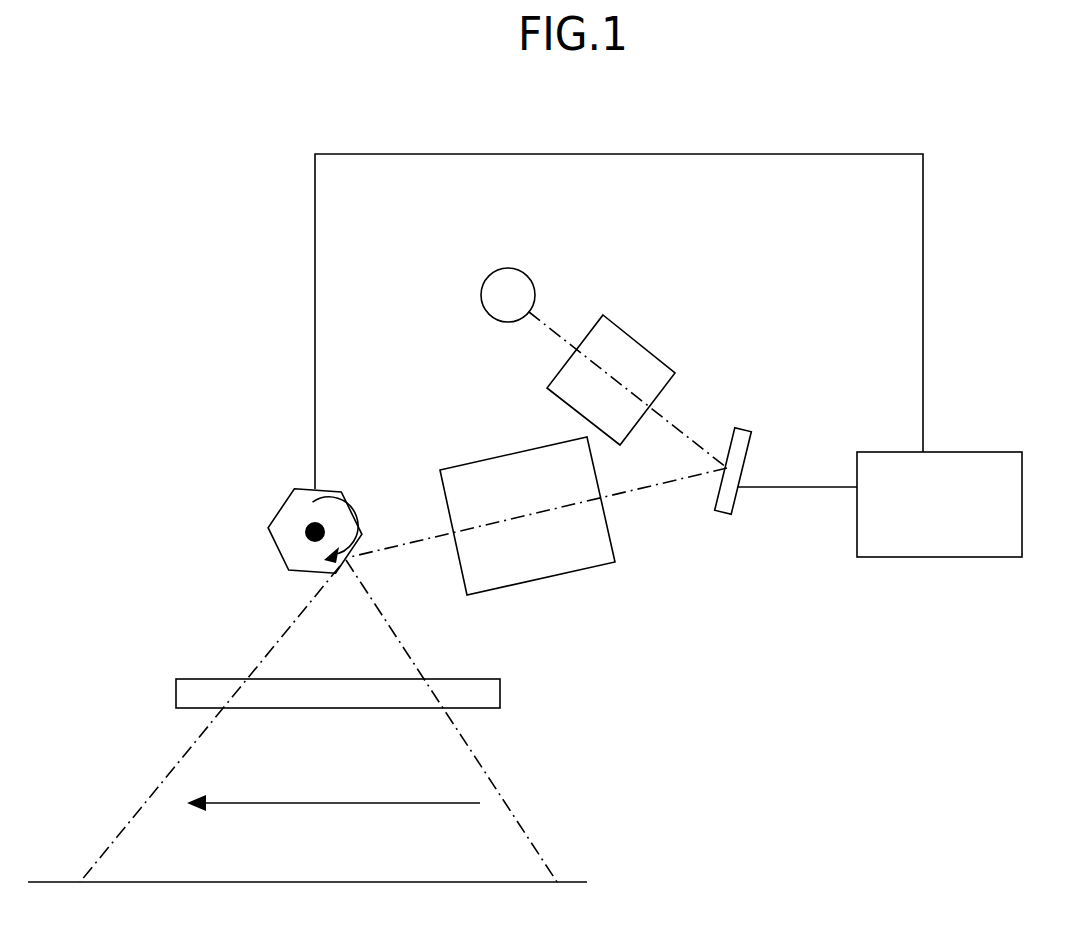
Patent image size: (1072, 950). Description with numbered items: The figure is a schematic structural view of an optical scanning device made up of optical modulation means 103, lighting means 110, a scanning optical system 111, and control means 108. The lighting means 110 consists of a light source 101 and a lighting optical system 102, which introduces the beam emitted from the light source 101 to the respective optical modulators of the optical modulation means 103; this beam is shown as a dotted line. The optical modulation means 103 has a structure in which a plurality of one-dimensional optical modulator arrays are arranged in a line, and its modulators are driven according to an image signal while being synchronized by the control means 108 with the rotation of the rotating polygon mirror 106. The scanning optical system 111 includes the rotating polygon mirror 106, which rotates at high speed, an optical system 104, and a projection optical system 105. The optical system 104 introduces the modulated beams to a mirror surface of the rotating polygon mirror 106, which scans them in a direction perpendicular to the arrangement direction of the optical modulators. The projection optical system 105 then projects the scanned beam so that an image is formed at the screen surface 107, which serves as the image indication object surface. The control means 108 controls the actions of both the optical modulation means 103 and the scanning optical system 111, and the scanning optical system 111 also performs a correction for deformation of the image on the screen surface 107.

The light source 101 is at (482, 283).
The lighting optical system 102 is at (657, 355).
The optical modulation means 103 is at (735, 503).
The optical system 104 is at (583, 570).
The projection optical system 105 is at (500, 693).
The rotating polygon mirror 106 is at (281, 508).
The screen surface 107 is at (507, 885).
The control means 108 is at (977, 452).
The lighting means 110 is at (623, 290).
The scanning optical system 111 is at (222, 558).